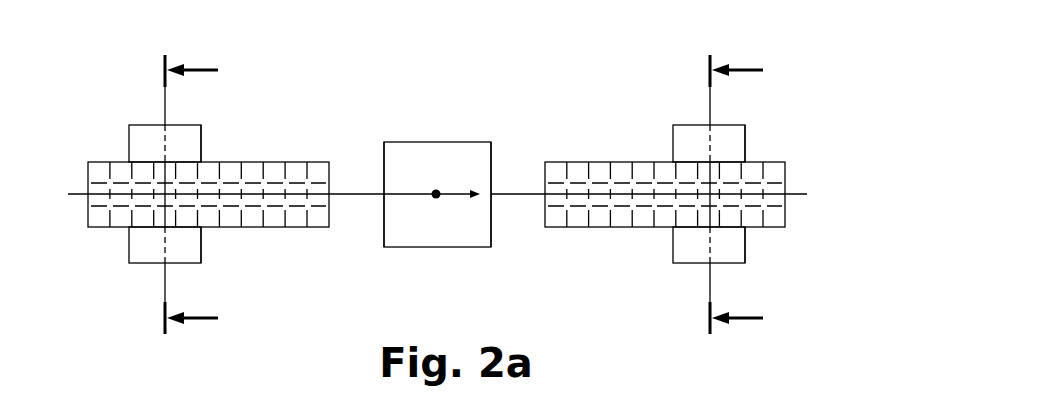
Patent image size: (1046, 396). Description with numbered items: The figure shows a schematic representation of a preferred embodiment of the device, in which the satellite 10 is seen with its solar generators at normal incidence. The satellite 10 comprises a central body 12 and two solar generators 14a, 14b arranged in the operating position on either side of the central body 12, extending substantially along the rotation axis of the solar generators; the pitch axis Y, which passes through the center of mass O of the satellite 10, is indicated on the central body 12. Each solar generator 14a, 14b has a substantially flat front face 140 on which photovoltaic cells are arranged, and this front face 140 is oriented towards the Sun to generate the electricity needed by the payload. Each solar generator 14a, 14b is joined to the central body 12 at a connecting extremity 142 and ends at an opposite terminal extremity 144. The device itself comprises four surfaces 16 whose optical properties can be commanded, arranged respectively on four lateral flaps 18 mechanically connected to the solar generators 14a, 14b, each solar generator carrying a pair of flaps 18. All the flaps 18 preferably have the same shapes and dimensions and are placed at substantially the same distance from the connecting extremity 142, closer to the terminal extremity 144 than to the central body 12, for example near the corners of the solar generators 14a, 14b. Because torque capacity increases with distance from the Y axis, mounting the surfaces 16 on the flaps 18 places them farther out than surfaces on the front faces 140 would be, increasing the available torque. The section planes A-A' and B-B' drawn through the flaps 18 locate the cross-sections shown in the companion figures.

The satellite 10 is at (459, 173).
The central body 12 is at (448, 142).
The solar generator 14a is at (270, 228).
The solar generator 14b is at (575, 228).
The front face 140 is at (290, 167).
The extremity 142 is at (383, 195).
The terminal extremity 144 is at (88, 213).
The surface whose optical properties can be commanded 16 is at (135, 140).
The lateral flap 18 is at (203, 133).